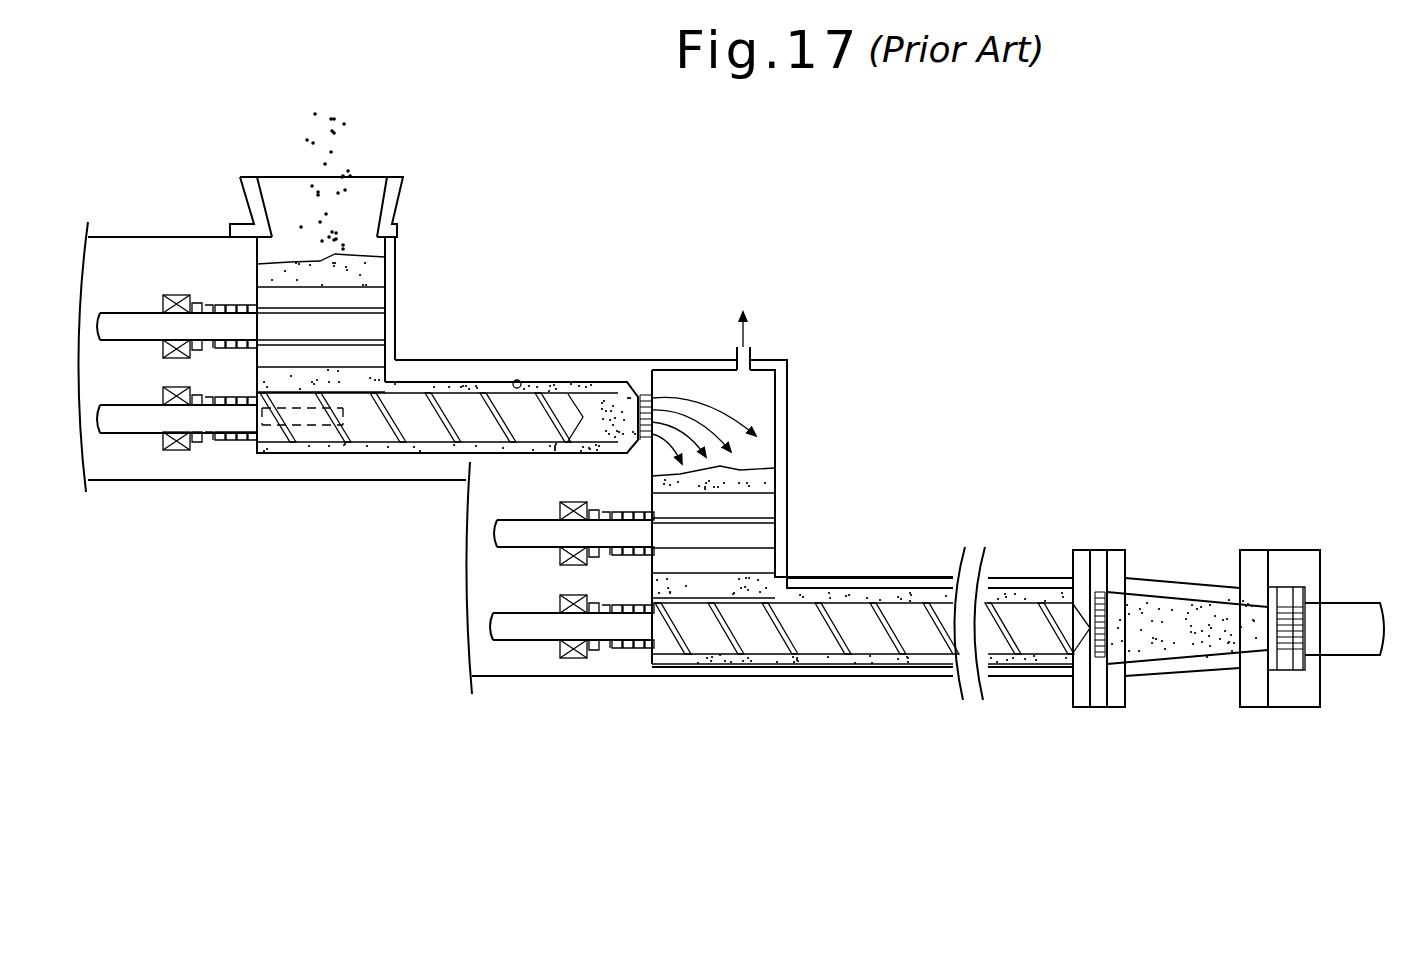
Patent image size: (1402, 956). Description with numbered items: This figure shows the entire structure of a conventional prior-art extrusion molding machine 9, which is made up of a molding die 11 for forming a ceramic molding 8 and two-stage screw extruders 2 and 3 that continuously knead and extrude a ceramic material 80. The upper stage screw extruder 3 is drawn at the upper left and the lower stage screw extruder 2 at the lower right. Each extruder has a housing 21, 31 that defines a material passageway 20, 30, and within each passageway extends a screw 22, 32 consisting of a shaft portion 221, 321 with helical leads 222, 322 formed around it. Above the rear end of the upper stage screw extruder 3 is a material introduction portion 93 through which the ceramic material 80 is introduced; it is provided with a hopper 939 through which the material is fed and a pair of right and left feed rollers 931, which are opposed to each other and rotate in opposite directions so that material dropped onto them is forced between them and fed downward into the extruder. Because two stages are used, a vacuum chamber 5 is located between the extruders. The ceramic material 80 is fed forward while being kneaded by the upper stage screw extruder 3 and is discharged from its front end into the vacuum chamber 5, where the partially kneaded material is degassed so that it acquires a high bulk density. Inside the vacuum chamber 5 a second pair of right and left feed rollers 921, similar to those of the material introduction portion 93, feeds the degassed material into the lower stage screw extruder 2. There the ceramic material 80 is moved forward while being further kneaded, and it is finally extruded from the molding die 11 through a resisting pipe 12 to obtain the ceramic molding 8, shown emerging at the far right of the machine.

The lower stage screw extruder 2 is at (797, 639).
The upper stage screw extruder 3 is at (378, 458).
The vacuum chamber 5 is at (753, 397).
The ceramic molding 8 is at (1352, 612).
The extrusion molding machine 9 is at (683, 488).
The molding die 11 is at (1293, 690).
The resisting pipe 12 is at (1150, 668).
The material passageway 20 is at (847, 597).
The housing 21 is at (895, 668).
The screw 22 is at (840, 693).
The material passageway 30 is at (517, 385).
The housing 31 is at (257, 462).
The screw 32 is at (413, 450).
The ceramic material 80 is at (330, 140).
The material introduction portion 93 is at (329, 232).
The shaft portion 221 is at (703, 632).
The helical leads 222 is at (717, 653).
The shaft portion 321 is at (300, 435).
The helical leads 322 is at (447, 418).
The feed rollers 921 is at (755, 535).
The feed rollers 931 is at (370, 328).
The hopper 939 is at (382, 180).